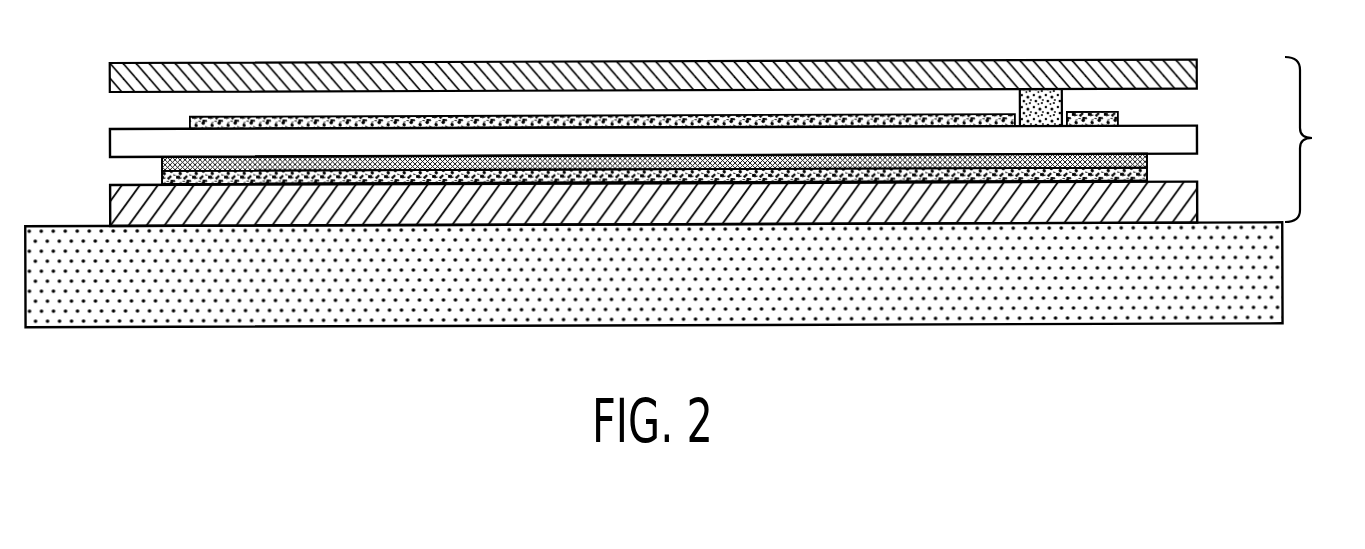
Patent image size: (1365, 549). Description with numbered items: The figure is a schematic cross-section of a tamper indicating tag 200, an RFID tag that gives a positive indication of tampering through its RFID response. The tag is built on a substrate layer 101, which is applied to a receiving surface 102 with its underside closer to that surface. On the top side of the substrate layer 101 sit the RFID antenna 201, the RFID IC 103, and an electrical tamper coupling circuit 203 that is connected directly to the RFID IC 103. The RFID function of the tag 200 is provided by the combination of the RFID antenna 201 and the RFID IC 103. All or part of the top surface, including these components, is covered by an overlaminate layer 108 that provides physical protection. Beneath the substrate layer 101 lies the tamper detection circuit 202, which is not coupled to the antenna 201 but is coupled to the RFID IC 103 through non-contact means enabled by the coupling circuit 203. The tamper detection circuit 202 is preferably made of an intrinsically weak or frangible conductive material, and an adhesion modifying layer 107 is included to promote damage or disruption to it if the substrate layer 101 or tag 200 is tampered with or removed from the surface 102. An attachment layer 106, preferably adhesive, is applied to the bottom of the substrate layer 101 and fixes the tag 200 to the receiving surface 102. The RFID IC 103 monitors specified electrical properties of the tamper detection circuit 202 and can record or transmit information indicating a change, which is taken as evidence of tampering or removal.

The tamper indicating tag 200 is at (1317, 139).
The overlaminate layer 108 is at (543, 63).
The RFID IC 103 is at (1048, 92).
The RFID antenna 201 is at (190, 125).
The electrical tamper coupling circuit 203 is at (1095, 113).
The substrate layer 101 is at (110, 141).
The tamper detection circuit 202 is at (162, 178).
The adhesion modifying layer 107 is at (1147, 165).
The attachment layer 106 is at (110, 211).
The receiving surface 102 is at (329, 328).